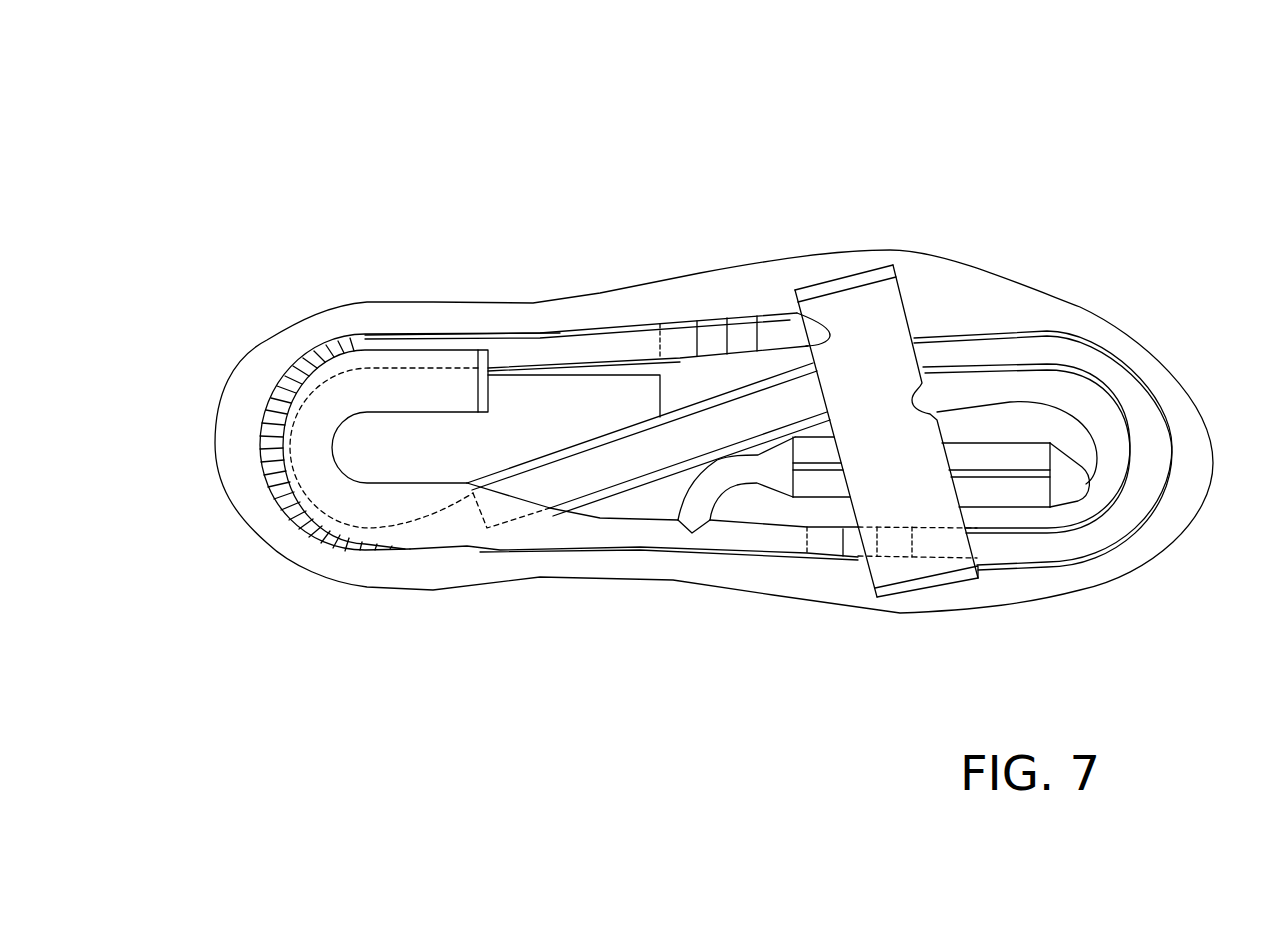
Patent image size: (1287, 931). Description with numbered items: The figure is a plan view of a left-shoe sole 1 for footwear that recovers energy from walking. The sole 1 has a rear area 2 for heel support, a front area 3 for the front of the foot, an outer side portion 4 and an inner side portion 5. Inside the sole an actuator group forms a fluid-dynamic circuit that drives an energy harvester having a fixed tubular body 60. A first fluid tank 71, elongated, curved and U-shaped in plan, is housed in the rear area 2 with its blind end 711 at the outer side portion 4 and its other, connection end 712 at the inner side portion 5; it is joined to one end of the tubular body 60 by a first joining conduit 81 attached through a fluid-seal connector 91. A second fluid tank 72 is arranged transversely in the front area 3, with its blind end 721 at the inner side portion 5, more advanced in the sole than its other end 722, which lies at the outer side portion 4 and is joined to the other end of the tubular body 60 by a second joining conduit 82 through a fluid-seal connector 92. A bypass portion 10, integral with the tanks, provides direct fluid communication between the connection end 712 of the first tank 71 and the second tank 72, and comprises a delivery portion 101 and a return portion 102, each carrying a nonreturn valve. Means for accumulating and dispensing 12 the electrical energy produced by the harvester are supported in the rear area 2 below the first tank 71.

The sole for footwear 1 is at (343, 178).
The rear area 2 is at (230, 467).
The front area 3 is at (1195, 412).
The outer side portion 4 is at (643, 283).
The inner side portion 5 is at (663, 570).
The bypass portion 10 is at (1050, 428).
The means for accumulating/dispensing 12 is at (538, 412).
The tubular body 60 is at (600, 485).
The first fluid tank 71 is at (325, 405).
The second fluid tank 72 is at (888, 337).
The first joining conduit 81 is at (1115, 383).
The second joining conduit 82 is at (335, 372).
The fluid-seal connector 91 is at (850, 540).
The fluid-seal connector 92 is at (710, 340).
The delivery portion 101 is at (1017, 493).
The return portion 102 is at (987, 447).
The blind end 711 is at (492, 352).
The connection end 712 is at (770, 540).
The blind end 721 is at (953, 575).
The connection end 722 is at (781, 330).